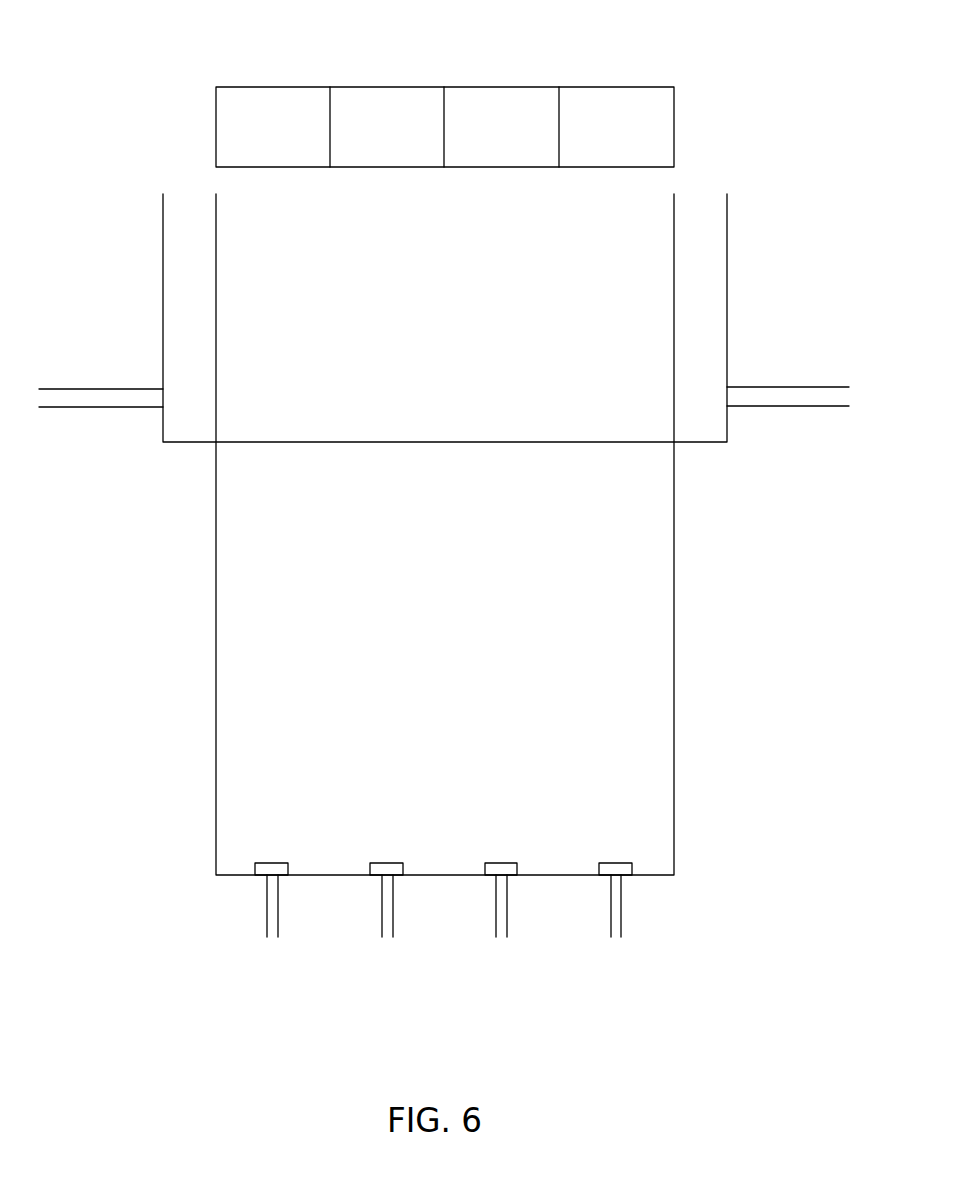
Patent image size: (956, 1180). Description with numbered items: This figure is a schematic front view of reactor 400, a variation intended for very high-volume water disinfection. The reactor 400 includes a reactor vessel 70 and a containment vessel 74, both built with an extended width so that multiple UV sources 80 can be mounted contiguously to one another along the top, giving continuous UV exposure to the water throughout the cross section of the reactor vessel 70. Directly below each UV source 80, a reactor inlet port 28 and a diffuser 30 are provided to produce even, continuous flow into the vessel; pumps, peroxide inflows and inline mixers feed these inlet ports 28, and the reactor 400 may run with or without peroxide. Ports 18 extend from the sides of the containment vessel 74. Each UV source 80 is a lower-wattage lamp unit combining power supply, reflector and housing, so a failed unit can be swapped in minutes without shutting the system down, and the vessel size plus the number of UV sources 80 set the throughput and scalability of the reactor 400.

The reactor 400 is at (713, 53).
The UV source 80 is at (288, 140).
The containment vessel 74 is at (163, 287).
The gas inlet/outlet pipes 18 is at (103, 409).
The reactor vessel 70 is at (456, 587).
The diffuser 30 is at (373, 863).
The reactor inlet port 28 is at (265, 877).